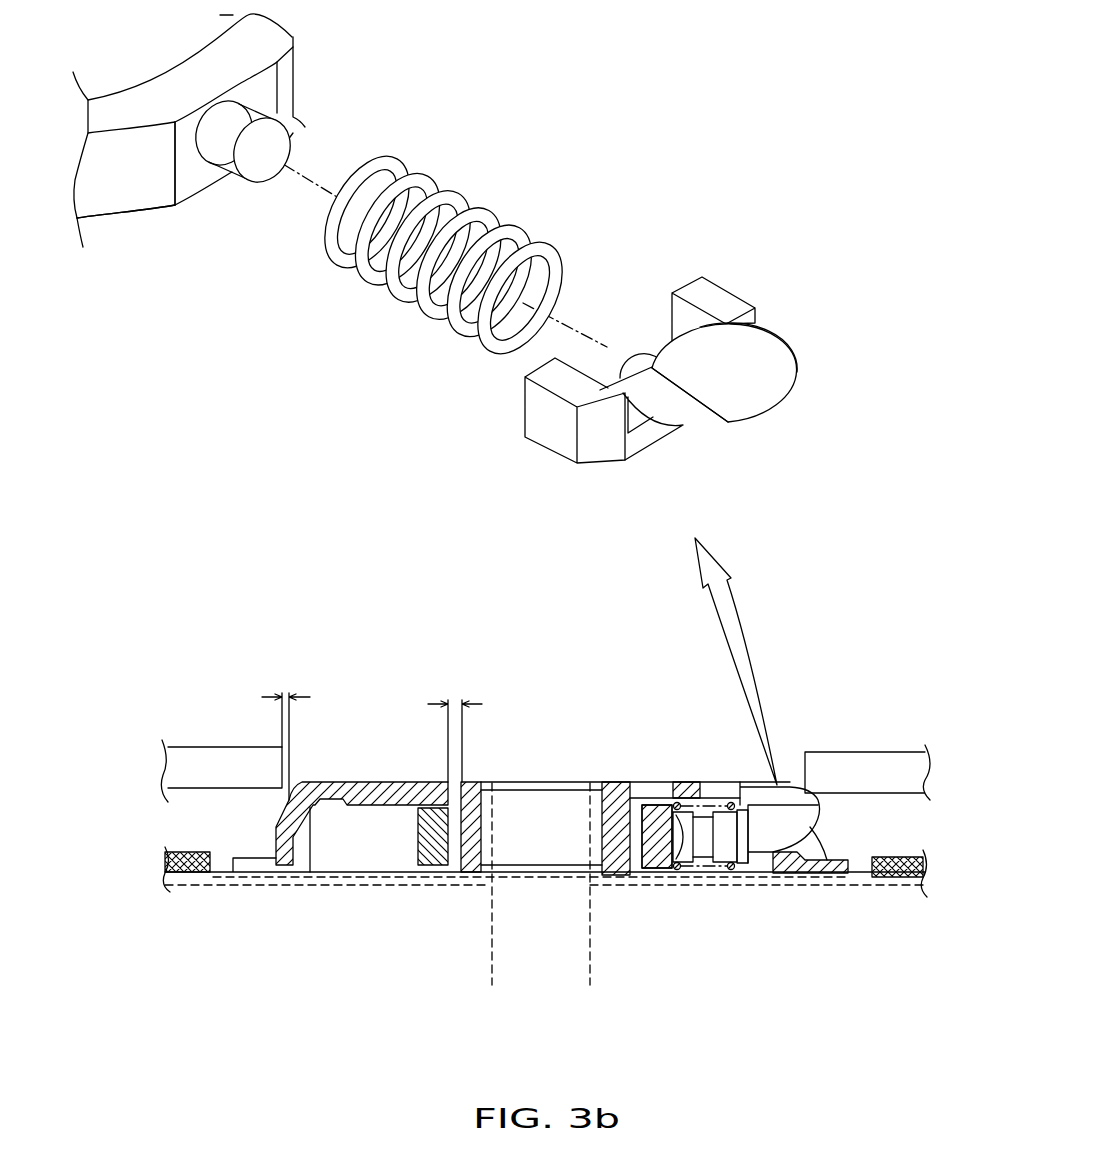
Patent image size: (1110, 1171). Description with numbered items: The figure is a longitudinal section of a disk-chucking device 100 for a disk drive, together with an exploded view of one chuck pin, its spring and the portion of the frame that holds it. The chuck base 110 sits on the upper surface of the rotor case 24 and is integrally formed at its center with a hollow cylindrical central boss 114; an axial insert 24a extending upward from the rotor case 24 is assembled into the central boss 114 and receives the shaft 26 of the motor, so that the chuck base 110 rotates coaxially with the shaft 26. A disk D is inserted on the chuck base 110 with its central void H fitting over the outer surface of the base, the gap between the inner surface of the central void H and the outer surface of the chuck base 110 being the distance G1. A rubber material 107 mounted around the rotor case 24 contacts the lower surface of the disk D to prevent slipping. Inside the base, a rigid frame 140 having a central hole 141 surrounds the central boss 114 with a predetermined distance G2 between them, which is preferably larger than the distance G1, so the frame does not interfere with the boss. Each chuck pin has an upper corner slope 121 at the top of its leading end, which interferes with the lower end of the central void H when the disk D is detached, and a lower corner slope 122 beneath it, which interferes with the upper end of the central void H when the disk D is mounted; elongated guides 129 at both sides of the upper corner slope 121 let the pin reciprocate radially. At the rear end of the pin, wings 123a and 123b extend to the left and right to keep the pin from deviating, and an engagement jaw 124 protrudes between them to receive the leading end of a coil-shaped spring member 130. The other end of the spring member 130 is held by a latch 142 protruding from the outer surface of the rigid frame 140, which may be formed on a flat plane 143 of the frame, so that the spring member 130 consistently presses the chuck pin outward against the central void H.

The disk-chucking device 100 is at (856, 573).
The rubber material 107 is at (900, 880).
The chuck base 110 is at (388, 781).
The central boss 114 is at (453, 866).
The upper corner slope 121 is at (750, 390).
The lower corner slope 122 is at (707, 427).
The wing 123a is at (547, 430).
The wing 123b is at (727, 293).
The engagement jaw 124 is at (647, 345).
The elongated guides 129 is at (773, 350).
The spring member 130 is at (457, 328).
The rigid frame 140 is at (167, 97).
The central hole 141 is at (647, 860).
The latch 142 is at (259, 182).
The flat plane 143 is at (193, 183).
The rotor case 24 is at (285, 882).
The axial insert 24a is at (493, 797).
The shaft 26 is at (543, 910).
The disk D is at (875, 753).
The central void H is at (802, 775).
The distance G1 is at (292, 733).
The predetermined distance G2 is at (459, 727).